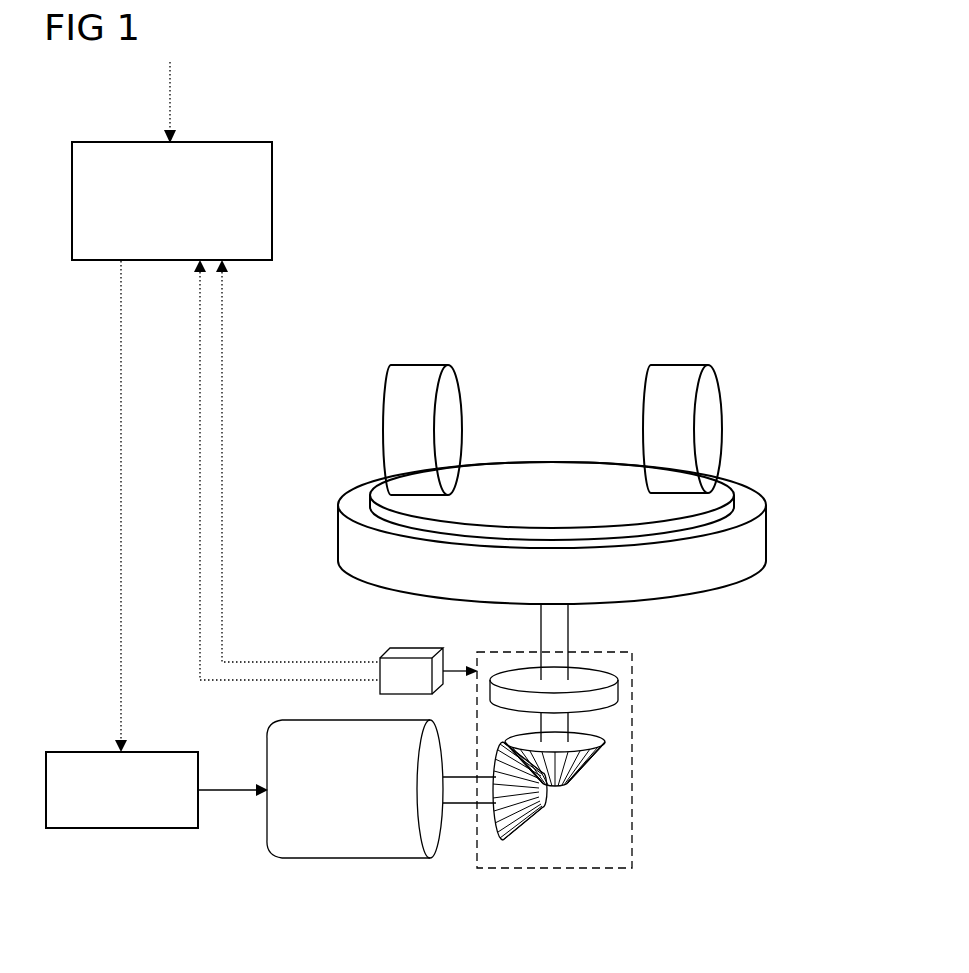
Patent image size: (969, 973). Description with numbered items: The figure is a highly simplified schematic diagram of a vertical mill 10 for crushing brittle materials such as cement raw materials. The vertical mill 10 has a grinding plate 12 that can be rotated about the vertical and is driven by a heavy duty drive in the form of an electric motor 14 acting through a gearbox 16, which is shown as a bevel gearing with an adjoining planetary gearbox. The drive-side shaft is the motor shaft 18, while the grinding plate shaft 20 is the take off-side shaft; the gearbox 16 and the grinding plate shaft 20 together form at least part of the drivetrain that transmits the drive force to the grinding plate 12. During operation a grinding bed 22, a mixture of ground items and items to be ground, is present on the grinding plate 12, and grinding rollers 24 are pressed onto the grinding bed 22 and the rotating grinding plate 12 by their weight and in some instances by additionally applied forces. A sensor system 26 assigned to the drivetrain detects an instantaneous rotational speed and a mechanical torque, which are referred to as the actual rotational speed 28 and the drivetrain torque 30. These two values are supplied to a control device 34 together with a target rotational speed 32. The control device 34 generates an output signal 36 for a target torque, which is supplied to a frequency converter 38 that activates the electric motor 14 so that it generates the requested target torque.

The vertical mill 10 is at (666, 332).
The grinding plate 12 is at (757, 545).
The electric motor 14 is at (355, 853).
The gearbox 16 is at (633, 812).
The motor shaft 18 is at (458, 797).
The grinding plate shaft 20 is at (560, 630).
The grinding bed 22 is at (728, 512).
The grinding roller 24 is at (452, 430).
The sensor system 26 is at (380, 656).
The actual rotational speed 28 is at (223, 407).
The drivetrain torque 30 is at (200, 408).
The target rotational speed 32 is at (171, 92).
The control device 34 is at (273, 205).
The output signal 36 is at (120, 408).
The frequency converter 38 is at (118, 830).